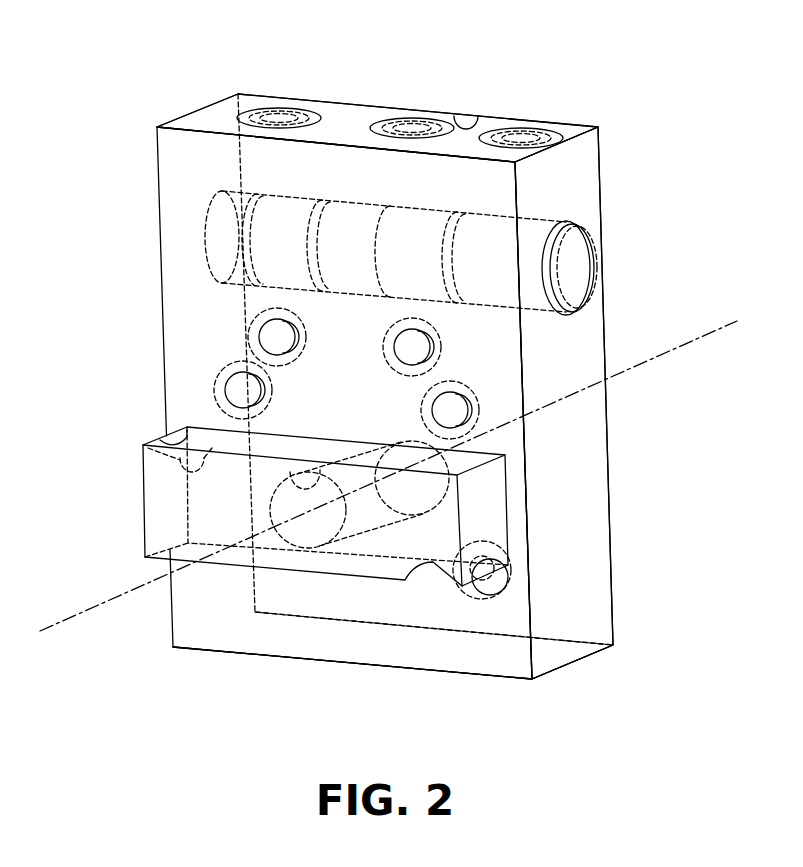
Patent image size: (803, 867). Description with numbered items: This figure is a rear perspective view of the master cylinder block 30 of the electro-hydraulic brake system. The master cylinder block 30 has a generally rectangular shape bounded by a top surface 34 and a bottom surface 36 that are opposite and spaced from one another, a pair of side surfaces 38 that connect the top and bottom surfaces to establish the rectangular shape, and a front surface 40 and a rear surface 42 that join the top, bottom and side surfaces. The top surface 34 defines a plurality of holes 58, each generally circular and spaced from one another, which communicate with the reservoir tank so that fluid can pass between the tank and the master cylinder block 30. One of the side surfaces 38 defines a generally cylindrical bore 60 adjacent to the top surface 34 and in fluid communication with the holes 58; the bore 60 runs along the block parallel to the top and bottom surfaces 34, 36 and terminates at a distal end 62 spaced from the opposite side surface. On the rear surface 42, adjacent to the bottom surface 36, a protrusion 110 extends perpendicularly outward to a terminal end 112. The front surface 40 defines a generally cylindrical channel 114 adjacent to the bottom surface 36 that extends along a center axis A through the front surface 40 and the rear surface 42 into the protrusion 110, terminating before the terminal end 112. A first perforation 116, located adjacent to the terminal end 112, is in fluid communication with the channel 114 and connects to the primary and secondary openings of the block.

The master cylinder block 30 is at (582, 121).
The top surface 34 is at (342, 111).
The bottom surface 36 is at (513, 679).
The side surfaces 38 is at (586, 187).
The front surface 40 is at (458, 115).
The rear surface 42 is at (178, 248).
The holes 58 is at (264, 108).
The bore 60 is at (575, 272).
The distal end 62 is at (205, 213).
The protrusion 110 is at (160, 440).
The terminal end 112 is at (160, 486).
The channel 114 is at (318, 456).
The first perforation 116 is at (142, 444).
The center axis A is at (87, 607).